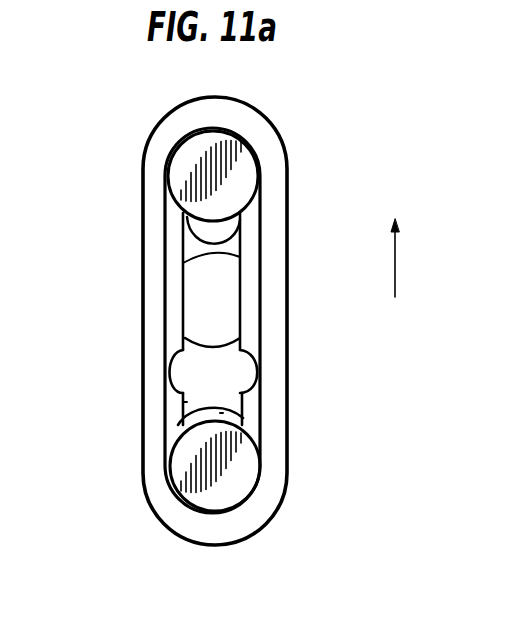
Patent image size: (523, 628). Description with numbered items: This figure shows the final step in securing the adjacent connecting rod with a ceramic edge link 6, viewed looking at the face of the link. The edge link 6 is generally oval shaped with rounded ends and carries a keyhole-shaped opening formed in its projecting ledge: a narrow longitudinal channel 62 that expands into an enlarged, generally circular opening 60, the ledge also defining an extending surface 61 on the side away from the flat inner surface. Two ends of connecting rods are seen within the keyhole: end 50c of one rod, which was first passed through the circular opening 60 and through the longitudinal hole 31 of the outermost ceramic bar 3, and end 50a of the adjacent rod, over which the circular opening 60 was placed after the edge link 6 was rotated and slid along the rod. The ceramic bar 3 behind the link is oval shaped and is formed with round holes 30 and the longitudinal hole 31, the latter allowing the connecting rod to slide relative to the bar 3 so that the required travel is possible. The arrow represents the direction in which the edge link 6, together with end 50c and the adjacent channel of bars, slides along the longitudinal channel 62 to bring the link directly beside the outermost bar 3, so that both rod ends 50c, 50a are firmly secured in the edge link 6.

The edge link 6 is at (283, 252).
The longitudinal channel 62 is at (215, 253).
The end of connecting rod 50c is at (243, 181).
The end of adjacent connecting rod 50a is at (243, 478).
The longitudinal hole 31 is at (212, 233).
The round hole 30 is at (218, 307).
The ceramic bar 3 is at (215, 253).
The circular opening 60 is at (183, 357).
The extending surface 61 is at (220, 413).